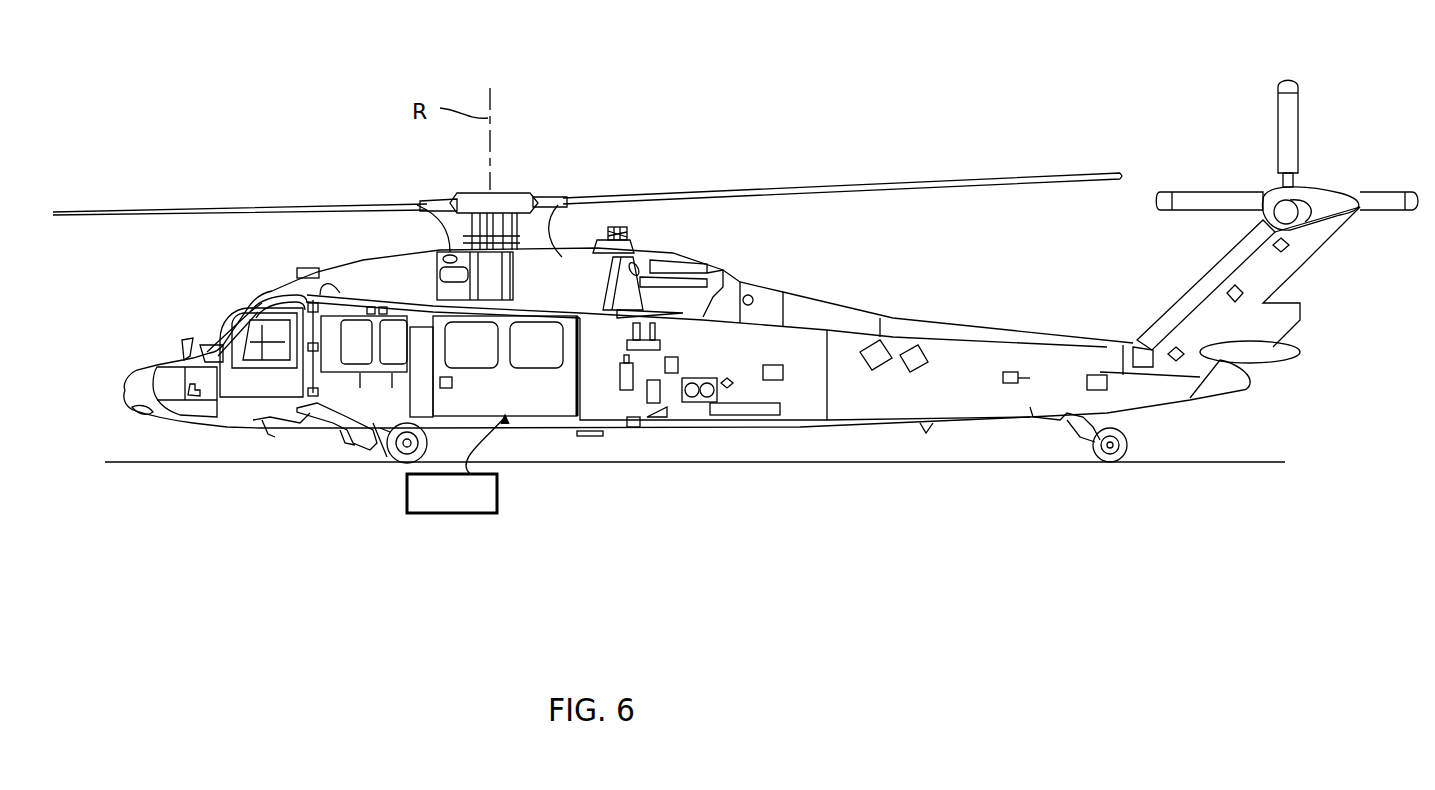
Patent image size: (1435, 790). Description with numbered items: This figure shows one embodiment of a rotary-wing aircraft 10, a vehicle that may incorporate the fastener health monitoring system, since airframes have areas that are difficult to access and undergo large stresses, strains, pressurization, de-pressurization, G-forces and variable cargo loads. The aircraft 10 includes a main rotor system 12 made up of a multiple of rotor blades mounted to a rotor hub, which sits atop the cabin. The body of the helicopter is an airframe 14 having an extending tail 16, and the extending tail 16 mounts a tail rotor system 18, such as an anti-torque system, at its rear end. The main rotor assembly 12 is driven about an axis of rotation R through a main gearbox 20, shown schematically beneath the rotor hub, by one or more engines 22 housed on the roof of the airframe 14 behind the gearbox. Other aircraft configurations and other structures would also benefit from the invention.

The rotary-wing aircraft 10 is at (862, 103).
The main rotor system 12 is at (540, 160).
The airframe 14 is at (670, 437).
The extending tail 16 is at (847, 413).
The tail rotor system 18 is at (1312, 143).
The main gearbox 20 is at (418, 203).
The engines 22 is at (562, 257).